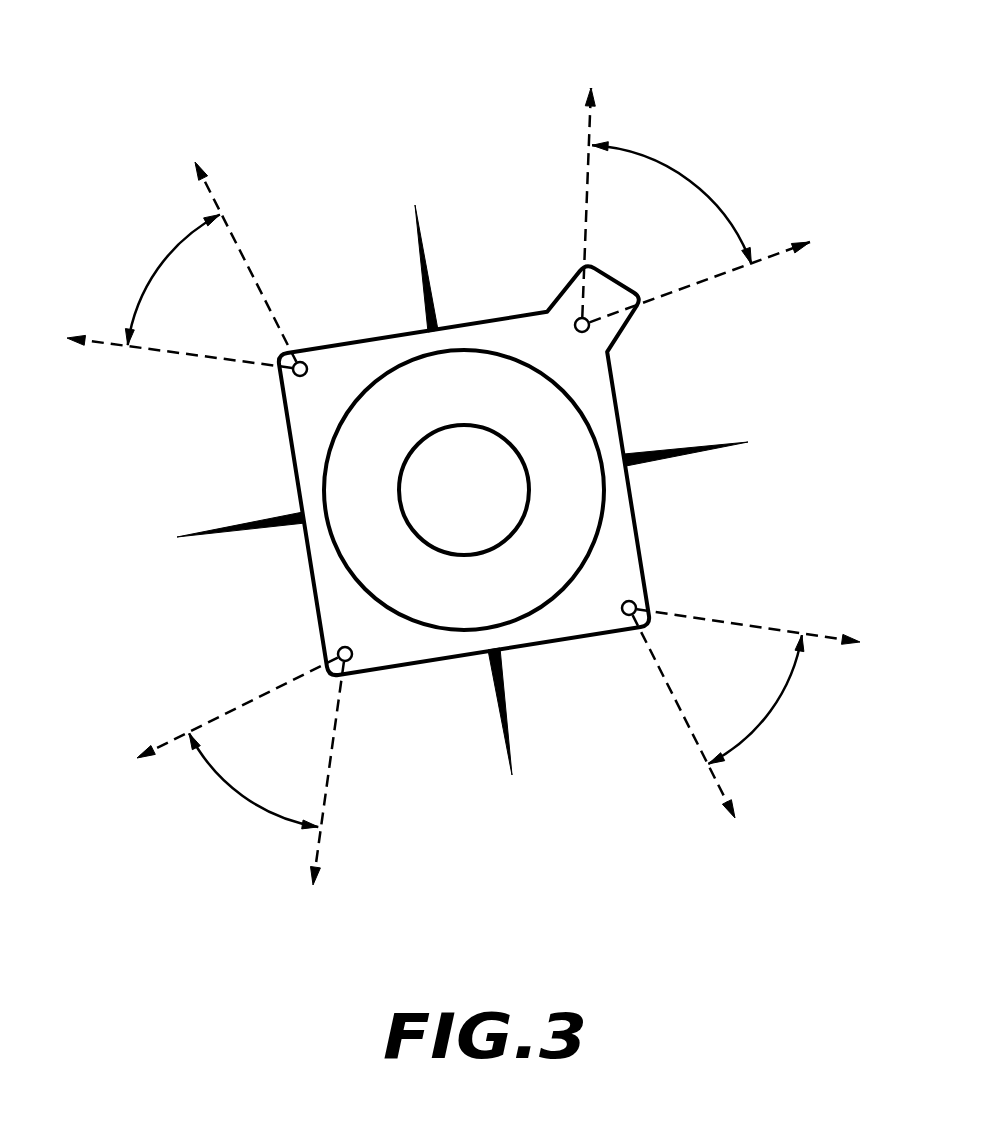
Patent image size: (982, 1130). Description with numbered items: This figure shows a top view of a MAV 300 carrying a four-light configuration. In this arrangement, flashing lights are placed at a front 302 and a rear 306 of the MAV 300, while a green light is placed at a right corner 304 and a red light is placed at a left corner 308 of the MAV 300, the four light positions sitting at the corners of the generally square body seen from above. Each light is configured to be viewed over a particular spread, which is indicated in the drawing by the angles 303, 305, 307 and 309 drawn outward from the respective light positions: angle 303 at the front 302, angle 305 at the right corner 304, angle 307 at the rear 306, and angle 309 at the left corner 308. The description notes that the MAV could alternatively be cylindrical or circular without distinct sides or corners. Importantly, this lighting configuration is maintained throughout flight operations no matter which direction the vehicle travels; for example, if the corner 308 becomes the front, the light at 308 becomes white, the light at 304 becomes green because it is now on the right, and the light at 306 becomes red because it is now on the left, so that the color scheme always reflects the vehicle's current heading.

The MAV 300 is at (292, 97).
The front 302 is at (301, 362).
The angle 303 is at (137, 250).
The right corner 304 is at (589, 329).
The angle 305 is at (760, 190).
The rear 306 is at (636, 606).
The angle 307 is at (788, 730).
The left corner 308 is at (337, 655).
The angle 309 is at (207, 803).